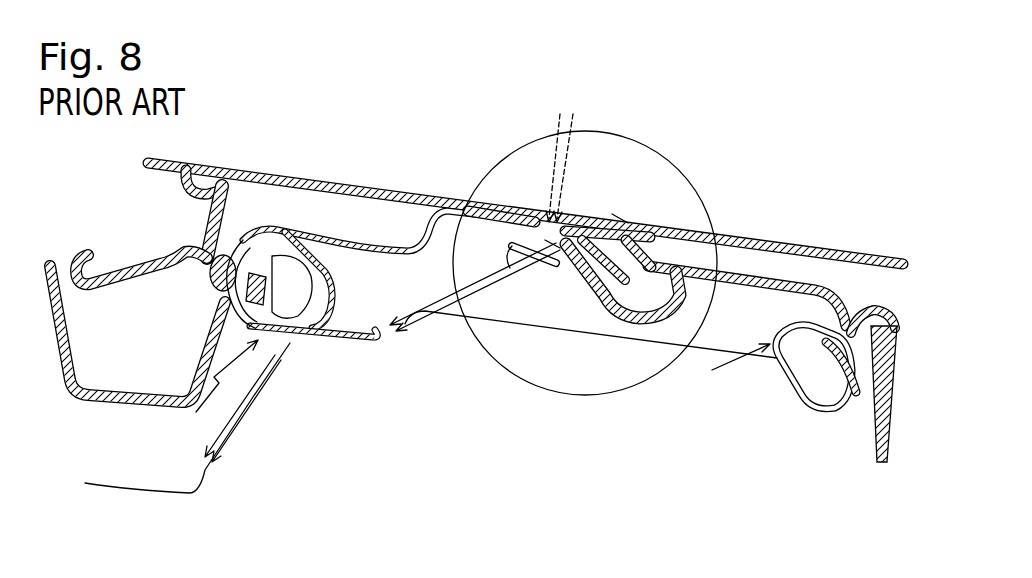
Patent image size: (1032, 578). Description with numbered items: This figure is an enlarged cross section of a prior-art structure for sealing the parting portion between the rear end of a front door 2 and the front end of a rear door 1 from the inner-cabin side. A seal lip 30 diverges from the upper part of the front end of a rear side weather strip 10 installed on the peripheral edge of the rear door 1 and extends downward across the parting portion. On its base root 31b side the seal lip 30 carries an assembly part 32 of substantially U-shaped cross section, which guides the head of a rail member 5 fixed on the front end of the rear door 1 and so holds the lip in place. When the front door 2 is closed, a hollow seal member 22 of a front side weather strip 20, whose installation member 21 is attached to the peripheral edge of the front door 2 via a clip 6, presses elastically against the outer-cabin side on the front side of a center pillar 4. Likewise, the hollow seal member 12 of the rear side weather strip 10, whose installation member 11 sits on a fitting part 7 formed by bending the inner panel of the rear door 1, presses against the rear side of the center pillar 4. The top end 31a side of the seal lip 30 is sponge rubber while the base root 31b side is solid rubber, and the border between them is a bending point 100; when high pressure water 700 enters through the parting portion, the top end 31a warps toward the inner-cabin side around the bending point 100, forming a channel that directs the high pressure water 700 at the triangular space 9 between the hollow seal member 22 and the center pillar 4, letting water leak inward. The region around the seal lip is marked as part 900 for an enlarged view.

The rear door 1 is at (767, 238).
The front door 2 is at (372, 186).
The center pillar 4 is at (447, 313).
The rail member 5 is at (665, 245).
The clip 6 is at (222, 274).
The fitting part 7 is at (873, 313).
The triangular space 9 is at (374, 339).
The rear side weather strip 10 is at (723, 372).
The installation member 11 is at (867, 418).
The hollow seal member 12 is at (800, 385).
The front side weather strip 20 is at (193, 410).
The installation member 21 is at (230, 314).
The hollow seal member 22 is at (330, 338).
The seal lip 30 is at (597, 318).
The top end 31a is at (490, 204).
The base root 31b is at (651, 313).
The assembly part 32 is at (622, 215).
The bending point 100 is at (558, 250).
The high pressure water 700 is at (371, 281).
The part 900 is at (668, 158).